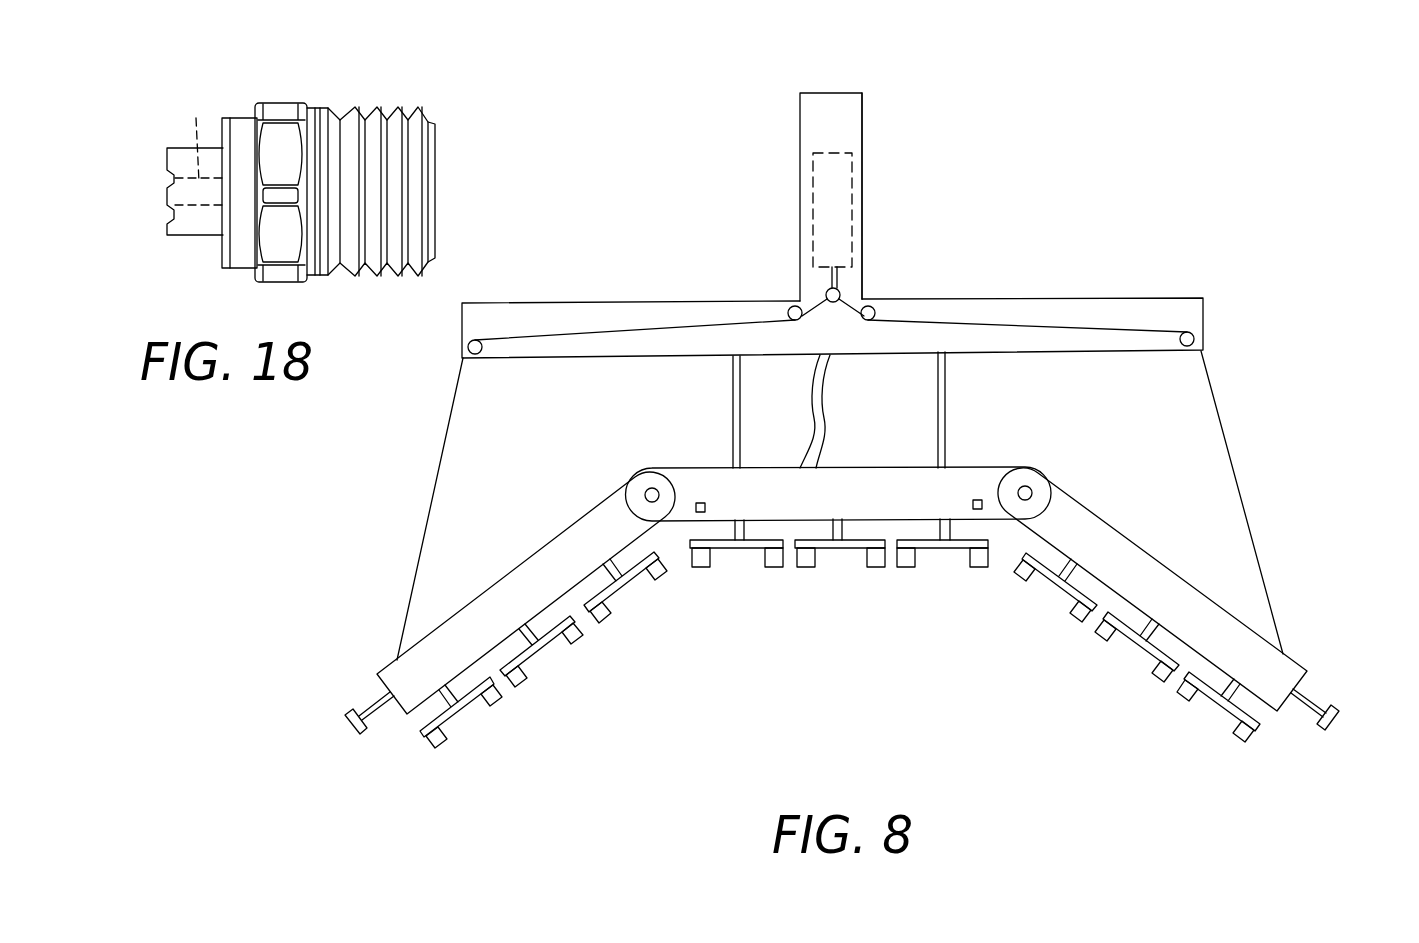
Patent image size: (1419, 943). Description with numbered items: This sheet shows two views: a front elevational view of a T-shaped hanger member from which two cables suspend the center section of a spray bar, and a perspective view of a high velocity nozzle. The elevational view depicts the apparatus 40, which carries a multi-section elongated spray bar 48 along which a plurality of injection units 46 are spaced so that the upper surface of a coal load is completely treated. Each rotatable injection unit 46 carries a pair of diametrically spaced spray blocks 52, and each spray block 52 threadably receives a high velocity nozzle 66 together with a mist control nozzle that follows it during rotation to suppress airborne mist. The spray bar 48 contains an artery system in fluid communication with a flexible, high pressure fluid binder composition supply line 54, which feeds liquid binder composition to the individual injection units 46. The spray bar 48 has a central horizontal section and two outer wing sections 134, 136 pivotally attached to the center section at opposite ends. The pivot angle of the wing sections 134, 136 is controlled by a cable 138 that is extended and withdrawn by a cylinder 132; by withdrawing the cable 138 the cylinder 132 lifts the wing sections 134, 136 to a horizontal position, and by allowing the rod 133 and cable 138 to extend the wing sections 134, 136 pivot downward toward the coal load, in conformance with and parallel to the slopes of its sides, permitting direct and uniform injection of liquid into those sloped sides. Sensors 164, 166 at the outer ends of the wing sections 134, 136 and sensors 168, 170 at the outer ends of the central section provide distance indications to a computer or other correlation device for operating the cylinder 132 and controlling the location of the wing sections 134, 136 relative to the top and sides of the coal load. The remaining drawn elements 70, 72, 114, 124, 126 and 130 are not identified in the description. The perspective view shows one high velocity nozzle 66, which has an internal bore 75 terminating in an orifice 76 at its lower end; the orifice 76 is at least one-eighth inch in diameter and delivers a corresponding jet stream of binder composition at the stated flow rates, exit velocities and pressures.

In FIG. 8, the apparatus 40 is at (820, 354).
In FIG. 8, the injection unit 46 is at (842, 563).
In FIG. 8, the spray bar 48 is at (1208, 558).
In FIG. 8, the spray block 52 is at (580, 643).
In FIG. 8, the fluid binder composition supply line 54 is at (818, 412).
In FIG. 18, the high velocity nozzle 66 is at (352, 110).
In FIG. 8, the bracket stem 70 is at (752, 528).
In FIG. 8, the center bar 72 is at (770, 480).
In FIG. 18, the internal bore 75 is at (178, 137).
In FIG. 18, the orifice 76 is at (165, 196).
In FIG. 8, the support rods 114 is at (945, 395).
In FIG. 8, the hydraulic cylinder housing 124 is at (800, 155).
In FIG. 8, the cylinder column 126 is at (862, 108).
In FIG. 8, the cross beam 130 is at (1108, 297).
In FIG. 8, the cylinder 132 is at (837, 192).
In FIG. 8, the rod 133 is at (842, 278).
In FIG. 8, the outer wing section 134 is at (448, 623).
In FIG. 8, the outer wing section 136 is at (1117, 542).
In FIG. 8, the cable 138 is at (428, 502).
In FIG. 8, the sensor 164 is at (350, 730).
In FIG. 8, the sensor 166 is at (1330, 723).
In FIG. 8, the sensor 168 is at (702, 503).
In FIG. 8, the sensor 170 is at (977, 512).